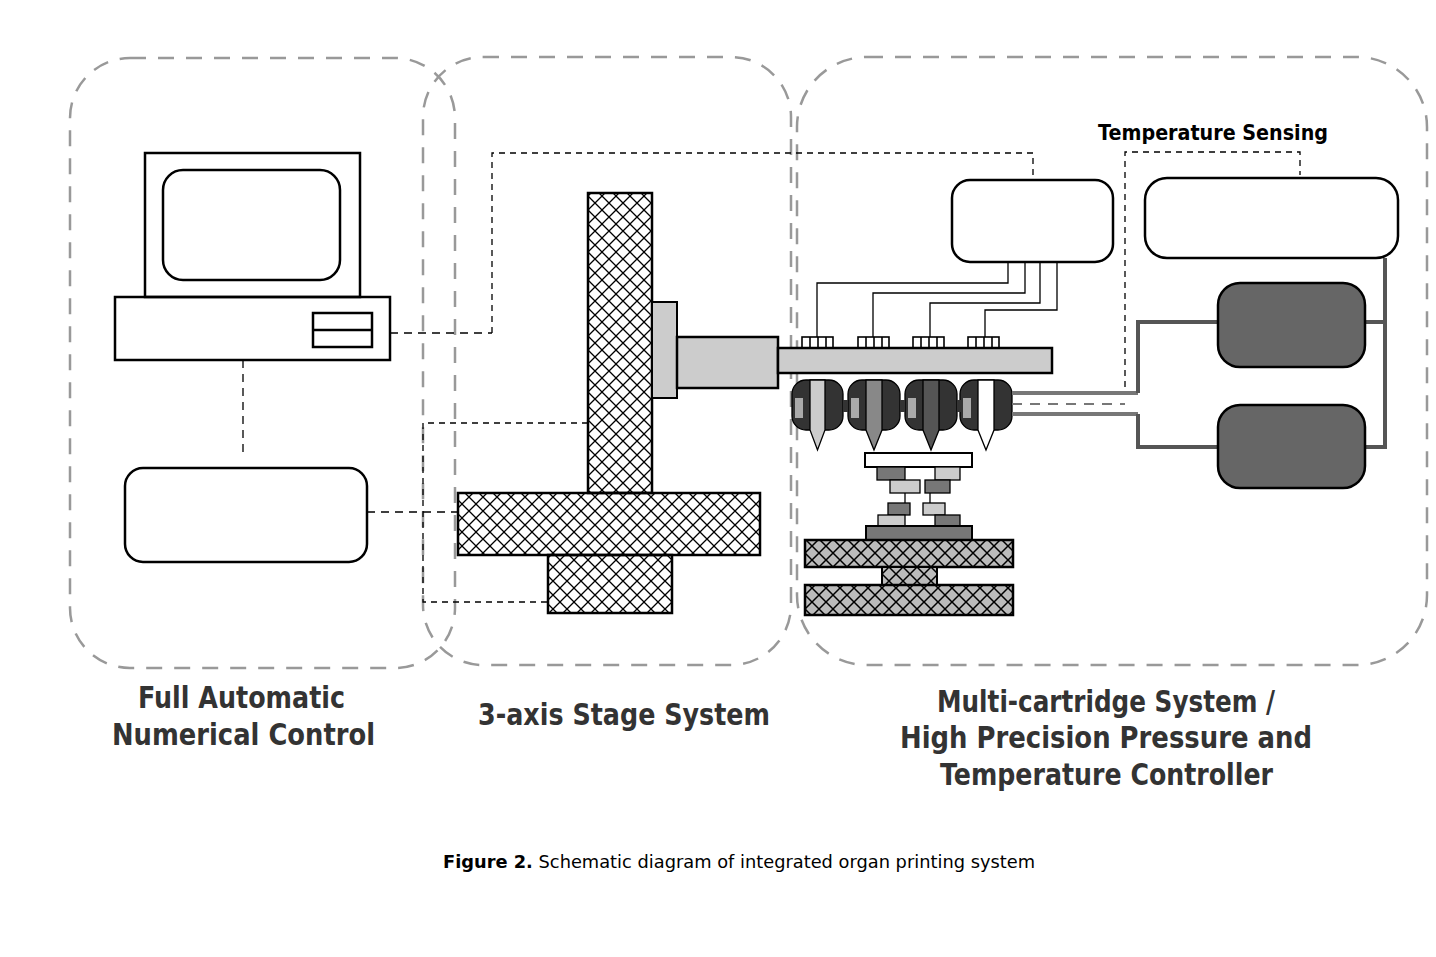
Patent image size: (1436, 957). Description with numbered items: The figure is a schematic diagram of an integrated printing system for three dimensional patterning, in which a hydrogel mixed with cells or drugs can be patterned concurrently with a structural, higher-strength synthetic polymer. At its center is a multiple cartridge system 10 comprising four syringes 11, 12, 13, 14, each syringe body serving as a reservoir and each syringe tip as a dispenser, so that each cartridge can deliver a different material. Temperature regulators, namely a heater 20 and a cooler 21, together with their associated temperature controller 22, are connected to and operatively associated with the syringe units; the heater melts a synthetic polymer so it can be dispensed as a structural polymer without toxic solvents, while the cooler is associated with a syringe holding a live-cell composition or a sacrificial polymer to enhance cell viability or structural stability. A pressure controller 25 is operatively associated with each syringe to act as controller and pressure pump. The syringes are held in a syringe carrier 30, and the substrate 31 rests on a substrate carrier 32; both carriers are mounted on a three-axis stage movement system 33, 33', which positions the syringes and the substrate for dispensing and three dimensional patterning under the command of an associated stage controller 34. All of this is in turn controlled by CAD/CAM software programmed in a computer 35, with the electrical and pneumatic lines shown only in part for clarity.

The multiple cartridge system 10 is at (877, 444).
The syringe 11 is at (985, 432).
The syringe 12 is at (920, 432).
The syringe 13 is at (870, 430).
The syringe 14 is at (807, 433).
The heater 20 is at (1220, 302).
The cooler 21 is at (1220, 418).
The temperature controller 22 is at (1271, 218).
The pressure controller 25 is at (952, 195).
The syringe carrier 30 is at (1035, 365).
The substrate 31 is at (972, 458).
The substrate carrier 32 is at (950, 485).
The 3-axis stage movement system 33 is at (618, 405).
The 3-axis stage movement system 33' is at (949, 571).
The 3-axis stage controller 34 is at (246, 515).
The computer 35 is at (252, 256).